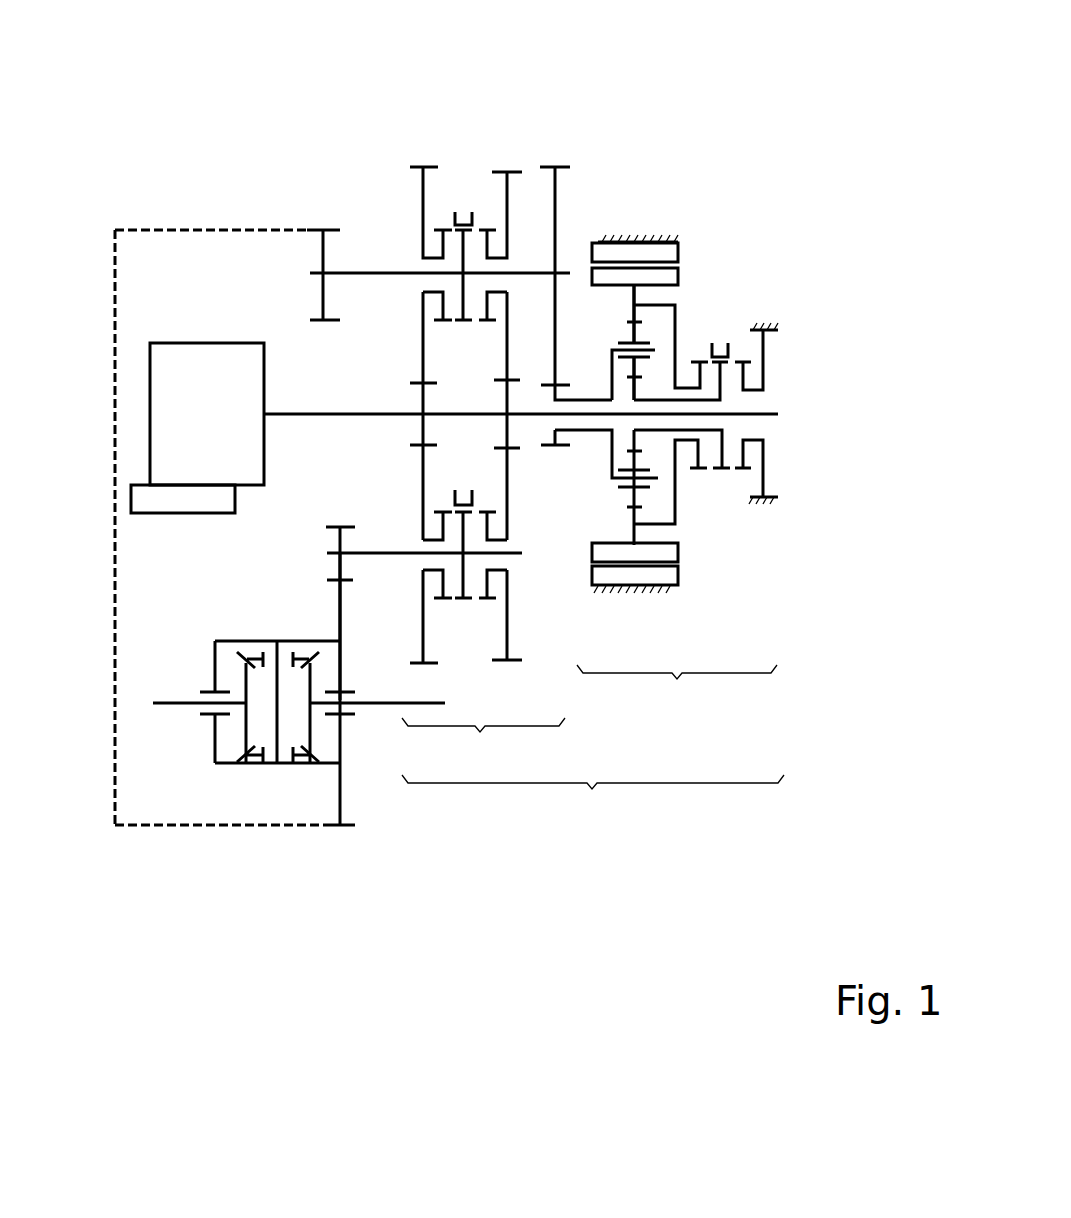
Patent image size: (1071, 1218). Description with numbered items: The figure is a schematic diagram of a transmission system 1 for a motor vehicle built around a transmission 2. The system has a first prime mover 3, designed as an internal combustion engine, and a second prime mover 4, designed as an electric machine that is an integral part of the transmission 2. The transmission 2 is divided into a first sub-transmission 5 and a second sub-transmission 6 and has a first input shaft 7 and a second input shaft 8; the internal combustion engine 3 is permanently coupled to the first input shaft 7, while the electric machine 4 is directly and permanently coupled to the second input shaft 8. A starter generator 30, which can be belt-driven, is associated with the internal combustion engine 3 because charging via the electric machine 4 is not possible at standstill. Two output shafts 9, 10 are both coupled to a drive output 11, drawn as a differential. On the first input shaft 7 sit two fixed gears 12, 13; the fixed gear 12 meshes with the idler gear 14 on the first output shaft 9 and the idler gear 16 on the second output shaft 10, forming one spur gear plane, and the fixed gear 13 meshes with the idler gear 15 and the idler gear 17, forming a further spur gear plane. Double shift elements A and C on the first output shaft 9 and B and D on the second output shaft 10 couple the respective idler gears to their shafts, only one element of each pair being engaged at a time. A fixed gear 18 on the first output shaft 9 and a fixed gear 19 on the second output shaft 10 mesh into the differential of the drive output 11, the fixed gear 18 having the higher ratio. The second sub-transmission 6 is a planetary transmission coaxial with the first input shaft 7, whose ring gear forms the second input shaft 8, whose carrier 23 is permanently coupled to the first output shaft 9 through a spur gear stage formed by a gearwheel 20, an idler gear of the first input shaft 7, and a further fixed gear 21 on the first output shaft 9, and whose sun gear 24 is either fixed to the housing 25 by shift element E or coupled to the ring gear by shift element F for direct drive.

The transmission system 1 is at (744, 97).
The transmission 2 is at (593, 807).
The first prime mover 3 is at (193, 440).
The second prime mover 4 is at (692, 259).
The first sub-transmission 5 is at (483, 750).
The second sub-transmission 6 is at (677, 697).
The first input shaft 7 is at (362, 413).
The second input shaft 8 is at (637, 298).
The first output shaft 9 is at (410, 272).
The second output shaft 10 is at (507, 433).
The drive output 11 is at (237, 837).
The fixed gear 12 is at (423, 400).
The fixed gear 13 is at (340, 543).
The idler gear 14 is at (422, 245).
The idler gear 15 is at (510, 243).
The idler gear 16 is at (425, 620).
The idler gear 17 is at (507, 608).
The fixed gear 18 is at (323, 298).
The fixed gear 19 is at (340, 608).
The gearwheel 20 is at (557, 440).
The fixed gear 21 is at (557, 240).
The carrier 23 is at (655, 350).
The sun gear 24 is at (660, 400).
The housing 25 is at (765, 500).
The starter generator 30 is at (193, 505).